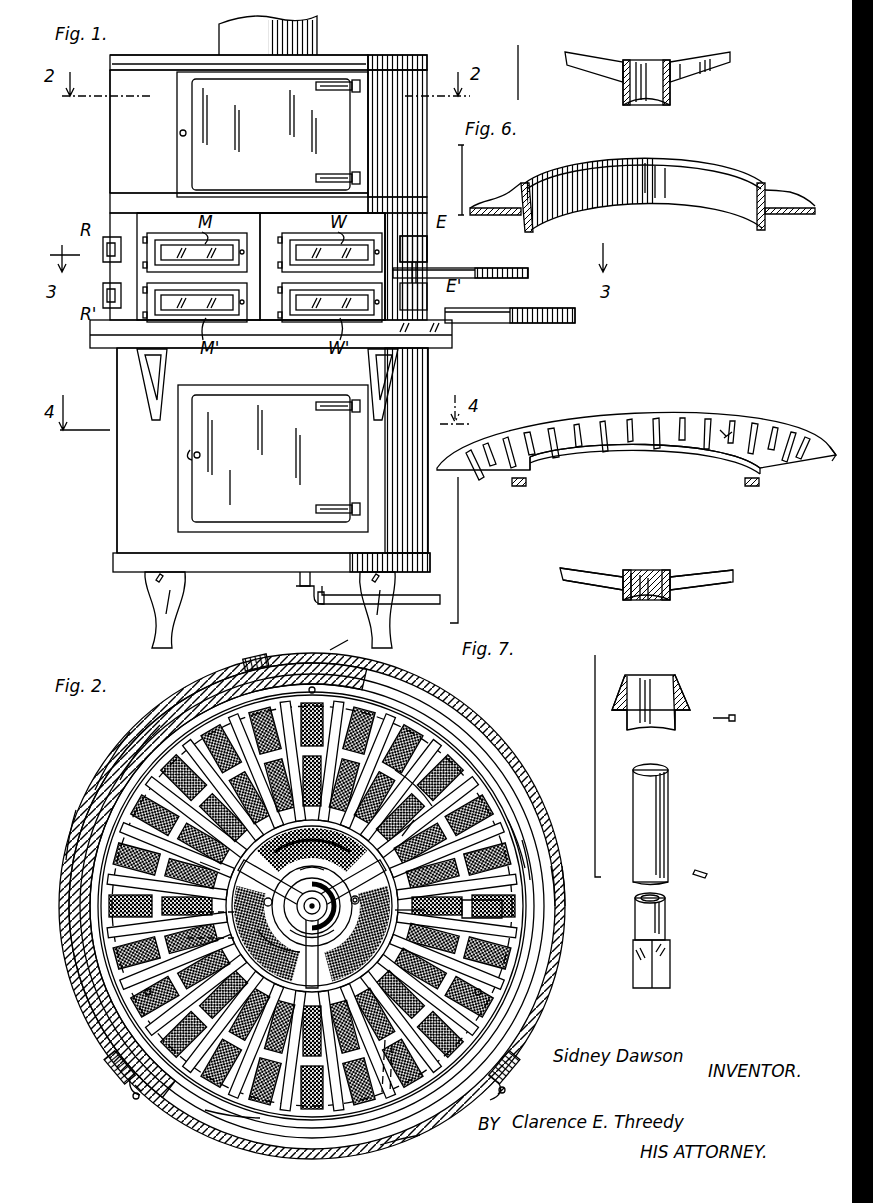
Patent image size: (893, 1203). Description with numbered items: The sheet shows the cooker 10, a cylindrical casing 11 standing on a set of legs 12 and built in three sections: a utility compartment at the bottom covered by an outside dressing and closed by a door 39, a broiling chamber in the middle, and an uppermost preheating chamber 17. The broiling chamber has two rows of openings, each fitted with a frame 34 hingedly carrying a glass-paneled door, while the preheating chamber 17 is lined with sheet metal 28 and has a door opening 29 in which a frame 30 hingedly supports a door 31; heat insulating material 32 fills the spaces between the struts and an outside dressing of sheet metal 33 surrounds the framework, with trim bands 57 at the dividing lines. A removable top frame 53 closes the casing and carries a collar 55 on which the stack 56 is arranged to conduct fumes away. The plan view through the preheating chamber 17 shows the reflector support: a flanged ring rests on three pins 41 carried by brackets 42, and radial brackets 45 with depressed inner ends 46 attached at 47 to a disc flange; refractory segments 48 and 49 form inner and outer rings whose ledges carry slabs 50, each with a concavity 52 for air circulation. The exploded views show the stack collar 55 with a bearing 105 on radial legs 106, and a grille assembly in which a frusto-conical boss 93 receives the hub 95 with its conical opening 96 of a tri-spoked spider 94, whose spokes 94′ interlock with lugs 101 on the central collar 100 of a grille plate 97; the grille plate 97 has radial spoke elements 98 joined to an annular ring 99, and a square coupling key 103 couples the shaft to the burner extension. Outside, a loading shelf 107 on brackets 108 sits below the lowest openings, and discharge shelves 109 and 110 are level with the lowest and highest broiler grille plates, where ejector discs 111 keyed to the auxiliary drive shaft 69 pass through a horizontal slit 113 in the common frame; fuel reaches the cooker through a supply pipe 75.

In FIG. 1, the cooker 10 is at (106, 152).
In FIG. 2, the cooker 10 is at (74, 822).
In FIG. 2, the cylindrical casing 11 is at (116, 750).
In FIG. 1, the legs 12 is at (160, 600).
In FIG. 2, the preheating chamber 17 is at (462, 762).
In FIG. 2, the sheet metal lining 28 is at (520, 848).
In FIG. 2, the door opening 29 is at (228, 1120).
In FIG. 2, the frame 30 is at (128, 1088).
In FIG. 1, the door 31 is at (282, 119).
In FIG. 2, the door 31 is at (400, 1145).
In FIG. 2, the heat insulating material 32 is at (538, 928).
In FIG. 1, the outside dressing of sheet metal 33 is at (130, 113).
In FIG. 2, the outside dressing of sheet metal 33 is at (550, 958).
In FIG. 1, the frame 34 is at (152, 214).
In FIG. 1, the door 39 is at (272, 465).
In FIG. 2, the pins 41 is at (317, 850).
In FIG. 2, the brackets 42 is at (85, 1010).
In FIG. 2, the brackets 45 is at (80, 990).
In FIG. 2, the depressed inner ends 46 is at (320, 906).
In FIG. 2, the attachment 47 is at (335, 862).
In FIG. 2, the arcuate segments 48 is at (321, 938).
In FIG. 2, the segments 49 is at (395, 1085).
In FIG. 2, the slabs 50 is at (410, 902).
In FIG. 2, the concavity 52 is at (482, 910).
In FIG. 1, the top frame 53 is at (372, 58).
In FIG. 6, the top frame 53 is at (507, 205).
In FIG. 6, the collar 55 is at (566, 180).
In FIG. 1, the stack 56 is at (300, 20).
In FIG. 1, the trim bands 57 is at (112, 205).
In FIG. 1, the drive shaft 69 is at (420, 282).
In FIG. 1, the supply pipe 75 is at (345, 600).
In FIG. 2, the frusto-conical boss 93 is at (279, 941).
In FIG. 7, the spider 94 is at (690, 568).
In FIG. 2, the spider 94 is at (372, 912).
In FIG. 7, the spokes 94′ is at (722, 572).
In FIG. 2, the spokes 94′ is at (375, 900).
In FIG. 7, the hub formation 95 is at (640, 564).
In FIG. 2, the hub formation 95 is at (269, 912).
In FIG. 7, the frusto-conical opening 96 is at (640, 600).
In FIG. 7, the grille plate 97 is at (667, 417).
In FIG. 2, the grille plate 97 is at (130, 722).
In FIG. 7, the spoke elements 98 is at (726, 425).
In FIG. 2, the spoke elements 98 is at (209, 916).
In FIG. 7, the annular ring 99 is at (780, 430).
In FIG. 2, the annular ring 99 is at (500, 796).
In FIG. 7, the central ring and collar 100 is at (680, 458).
In FIG. 2, the central ring and collar 100 is at (202, 858).
In FIG. 7, the lugs 101 is at (725, 480).
In FIG. 2, the lugs 101 is at (408, 825).
In FIG. 7, the square coupling key 103 is at (668, 972).
In FIG. 6, the bearing 105 is at (645, 65).
In FIG. 6, the legs 106 is at (705, 60).
In FIG. 1, the shelf 107 is at (108, 345).
In FIG. 1, the brackets 108 is at (148, 388).
In FIG. 1, the discharge shelf 109 is at (544, 310).
In FIG. 1, the shelf 110 is at (530, 274).
In FIG. 1, the ejector disc 111 is at (488, 270).
In FIG. 1, the horizontal slit 113 is at (428, 258).